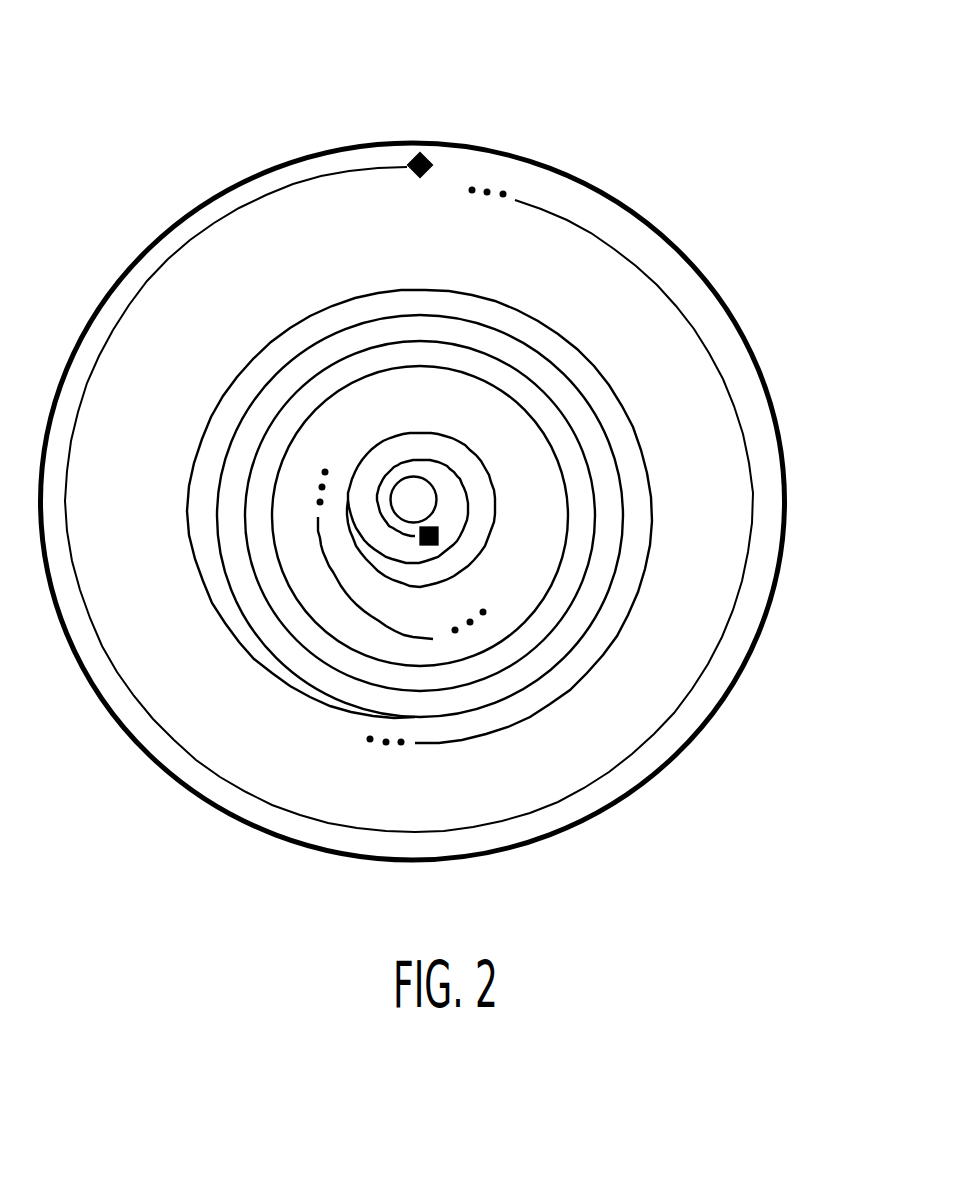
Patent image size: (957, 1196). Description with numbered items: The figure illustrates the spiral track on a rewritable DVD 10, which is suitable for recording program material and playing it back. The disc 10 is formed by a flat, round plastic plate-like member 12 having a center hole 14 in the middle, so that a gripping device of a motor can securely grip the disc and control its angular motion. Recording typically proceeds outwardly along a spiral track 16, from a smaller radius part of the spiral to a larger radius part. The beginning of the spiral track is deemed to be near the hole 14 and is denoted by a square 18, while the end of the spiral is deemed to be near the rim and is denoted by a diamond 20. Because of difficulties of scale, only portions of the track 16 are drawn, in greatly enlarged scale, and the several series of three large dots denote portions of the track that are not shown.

The rewritable DVD 10 is at (420, 34).
The plate-like member 12 is at (413, 470).
The center hole 14 is at (634, 545).
The spiral track 16 is at (479, 488).
The square 18 is at (596, 605).
The diamond 20 is at (409, 452).